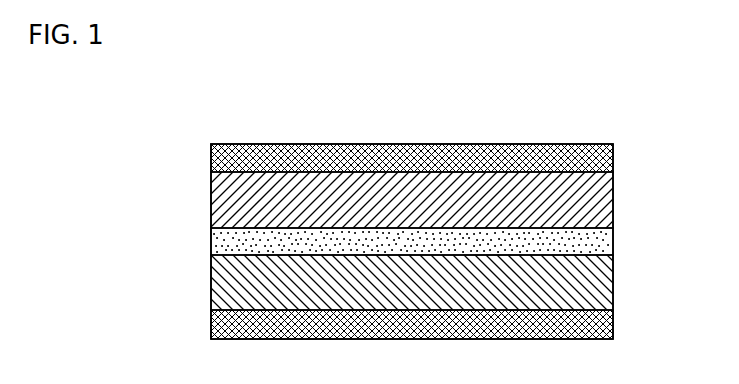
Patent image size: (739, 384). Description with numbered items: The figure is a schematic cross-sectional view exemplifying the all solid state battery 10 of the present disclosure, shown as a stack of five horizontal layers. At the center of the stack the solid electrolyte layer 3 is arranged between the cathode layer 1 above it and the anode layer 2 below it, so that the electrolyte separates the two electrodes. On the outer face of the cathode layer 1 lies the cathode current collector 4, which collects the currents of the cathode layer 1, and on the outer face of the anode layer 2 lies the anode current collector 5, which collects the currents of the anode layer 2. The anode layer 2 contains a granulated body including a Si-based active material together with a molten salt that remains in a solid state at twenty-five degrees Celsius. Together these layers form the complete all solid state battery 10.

The all solid state battery 10 is at (605, 112).
The cathode layer 1 is at (600, 200).
The anode layer 2 is at (600, 281).
The solid electrolyte layer 3 is at (600, 241).
The cathode current collector 4 is at (601, 154).
The anode current collector 5 is at (600, 322).